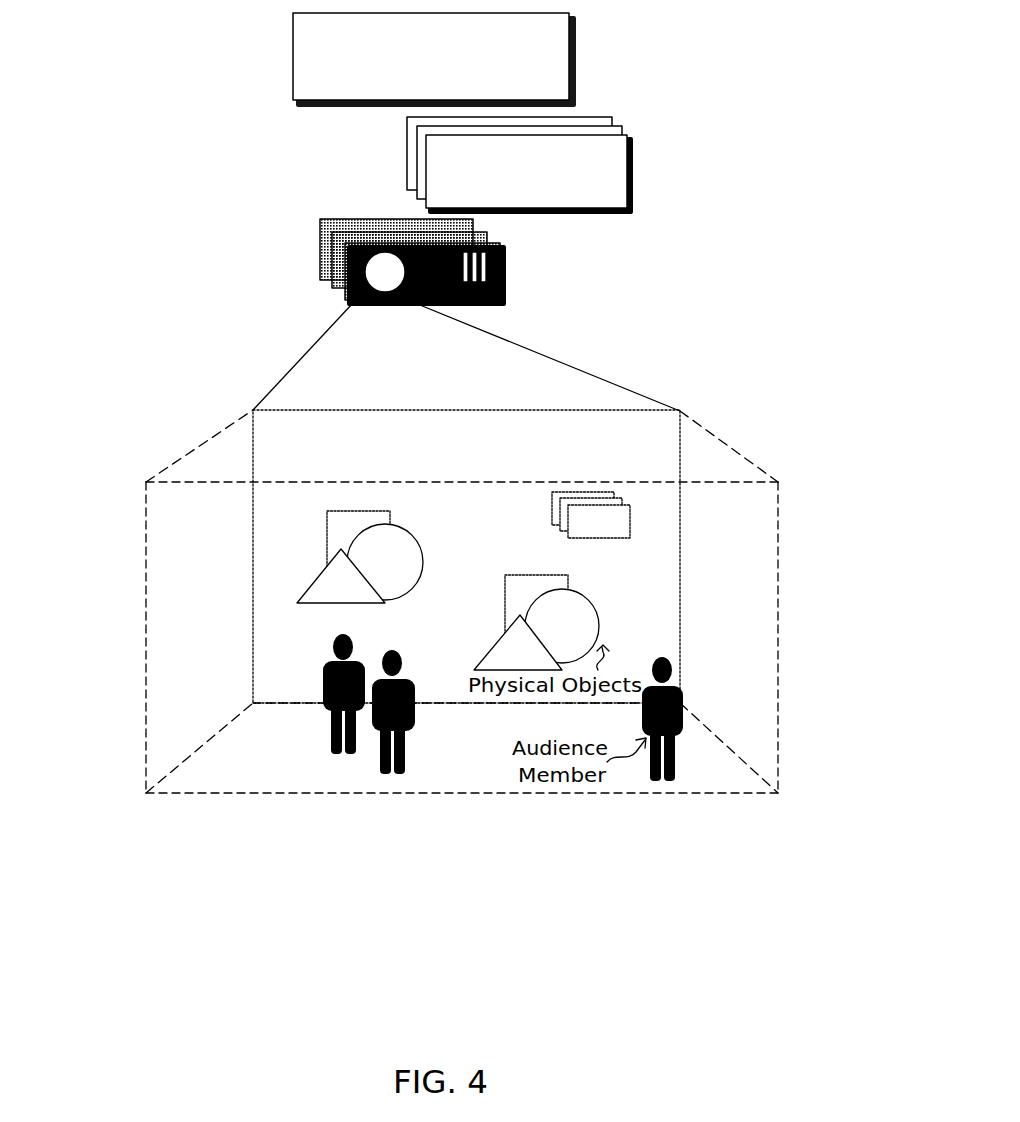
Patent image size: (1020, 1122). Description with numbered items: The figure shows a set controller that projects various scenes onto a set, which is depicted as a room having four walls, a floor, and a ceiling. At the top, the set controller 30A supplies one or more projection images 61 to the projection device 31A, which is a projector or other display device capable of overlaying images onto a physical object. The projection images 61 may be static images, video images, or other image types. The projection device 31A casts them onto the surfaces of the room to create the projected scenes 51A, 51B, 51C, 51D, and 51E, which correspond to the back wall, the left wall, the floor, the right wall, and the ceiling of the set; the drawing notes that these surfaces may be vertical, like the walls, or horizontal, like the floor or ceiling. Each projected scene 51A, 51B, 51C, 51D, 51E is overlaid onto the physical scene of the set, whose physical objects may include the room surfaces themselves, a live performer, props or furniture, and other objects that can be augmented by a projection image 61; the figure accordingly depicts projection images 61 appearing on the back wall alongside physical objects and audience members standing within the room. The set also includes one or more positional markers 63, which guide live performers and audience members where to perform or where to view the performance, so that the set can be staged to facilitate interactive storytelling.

The set controller 30A is at (386, 219).
The projection images 61 is at (415, 607).
The projection device 31A is at (502, 257).
The projected scene 51A is at (410, 374).
The projected scene 51B is at (138, 643).
The projected scene 51C is at (341, 803).
The projected scene 51D is at (781, 602).
The projected scene 51E is at (763, 479).
The positional markers 63 is at (591, 515).